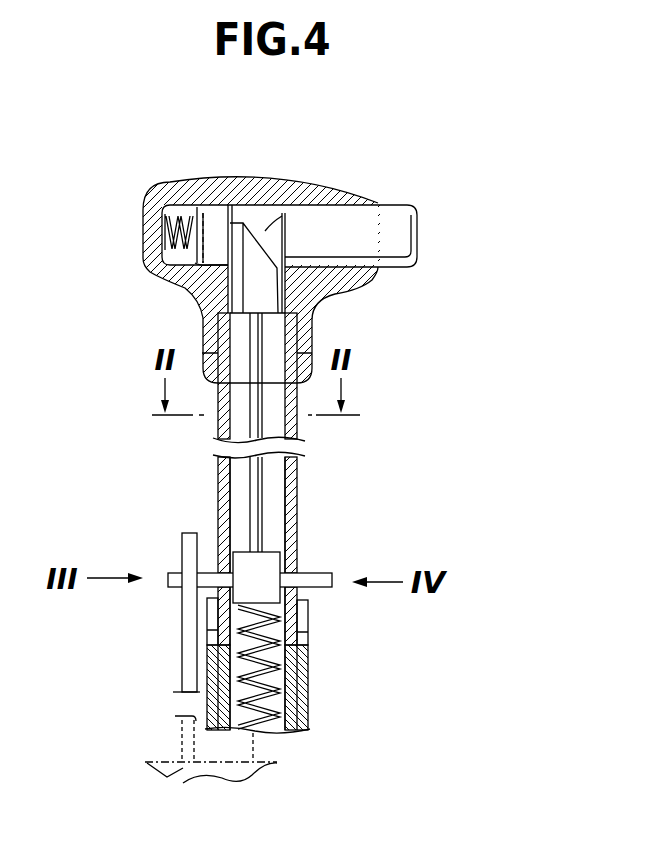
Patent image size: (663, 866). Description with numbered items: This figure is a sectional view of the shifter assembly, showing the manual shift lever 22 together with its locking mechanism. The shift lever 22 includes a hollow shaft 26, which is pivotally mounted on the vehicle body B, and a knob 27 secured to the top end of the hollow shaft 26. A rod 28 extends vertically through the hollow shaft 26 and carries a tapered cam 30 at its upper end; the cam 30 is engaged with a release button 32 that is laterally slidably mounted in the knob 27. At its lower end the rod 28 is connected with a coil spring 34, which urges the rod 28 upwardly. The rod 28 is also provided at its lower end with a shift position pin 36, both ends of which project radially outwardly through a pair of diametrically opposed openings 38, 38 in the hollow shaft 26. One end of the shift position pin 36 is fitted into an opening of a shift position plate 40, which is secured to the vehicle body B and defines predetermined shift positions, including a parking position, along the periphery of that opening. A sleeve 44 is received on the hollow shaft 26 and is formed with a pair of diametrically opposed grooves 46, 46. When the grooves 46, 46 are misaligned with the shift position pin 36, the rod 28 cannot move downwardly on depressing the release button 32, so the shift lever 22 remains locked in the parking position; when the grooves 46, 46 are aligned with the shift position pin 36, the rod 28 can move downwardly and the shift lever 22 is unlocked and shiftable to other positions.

The shift lever 22 is at (140, 224).
The knob 27 is at (330, 183).
The tapered cam 30 is at (264, 215).
The release button 32 is at (393, 233).
The hollow shaft 26 is at (218, 505).
The rod 28 is at (258, 497).
The shift position pin 36 is at (172, 578).
The shift position plate 40 is at (182, 610).
The openings 38 is at (214, 618).
The grooves 46 is at (210, 631).
The sleeve 44 is at (303, 699).
The coil spring 34 is at (267, 710).
The vehicle body B is at (167, 780).